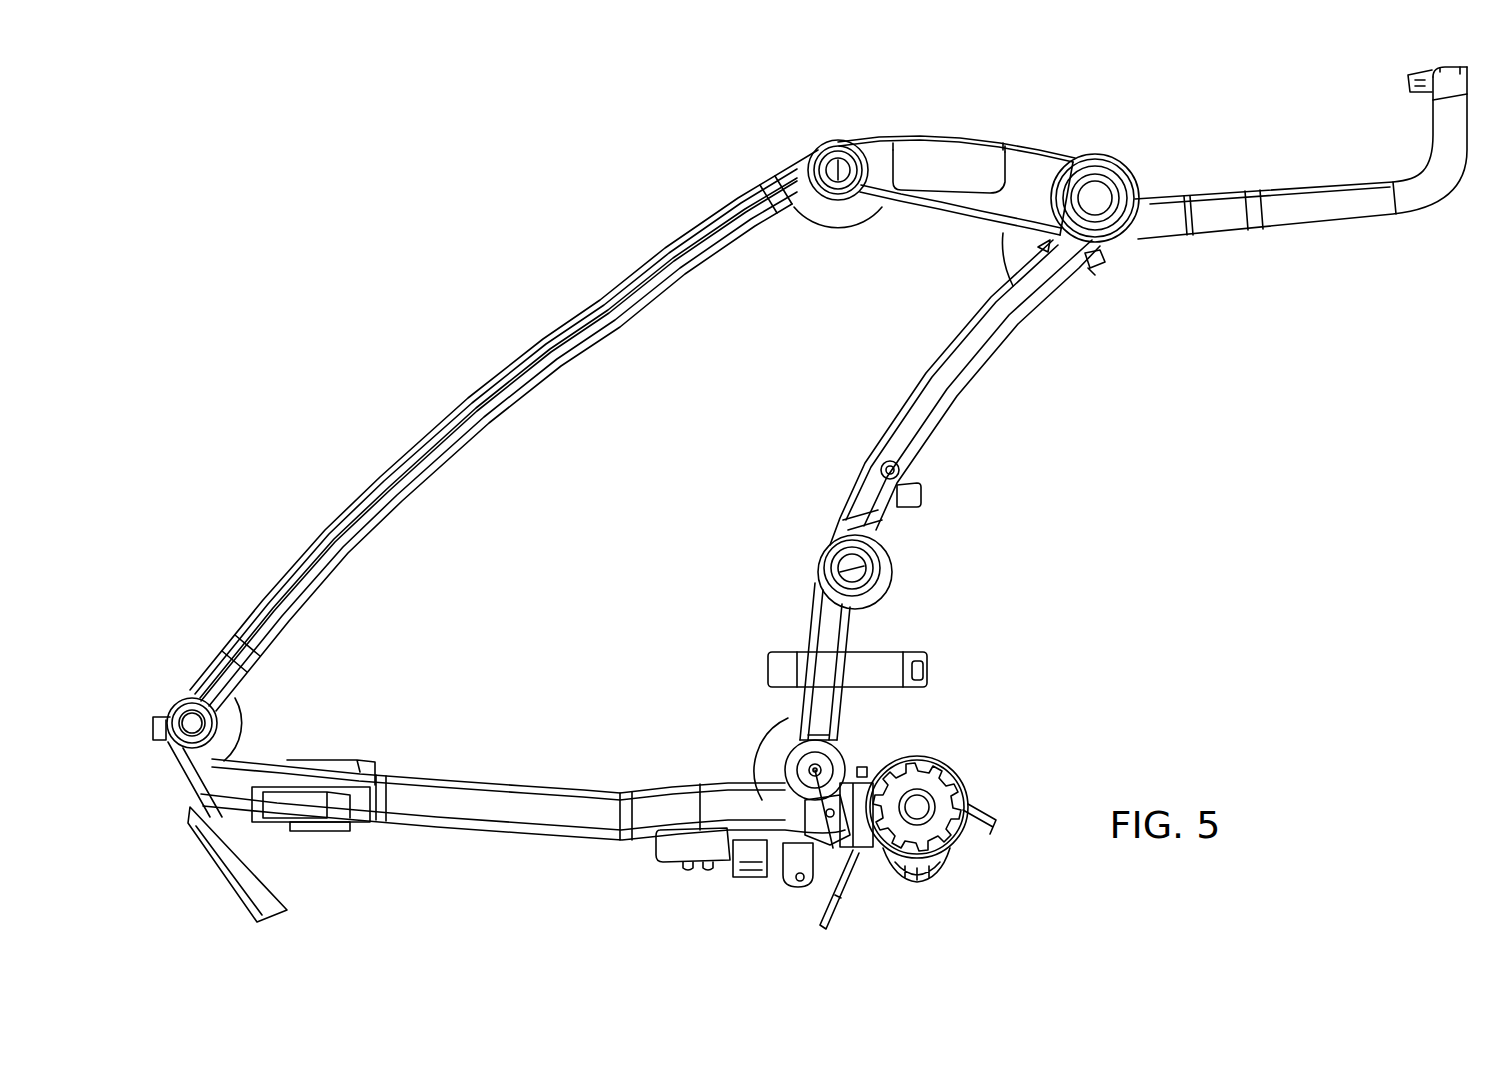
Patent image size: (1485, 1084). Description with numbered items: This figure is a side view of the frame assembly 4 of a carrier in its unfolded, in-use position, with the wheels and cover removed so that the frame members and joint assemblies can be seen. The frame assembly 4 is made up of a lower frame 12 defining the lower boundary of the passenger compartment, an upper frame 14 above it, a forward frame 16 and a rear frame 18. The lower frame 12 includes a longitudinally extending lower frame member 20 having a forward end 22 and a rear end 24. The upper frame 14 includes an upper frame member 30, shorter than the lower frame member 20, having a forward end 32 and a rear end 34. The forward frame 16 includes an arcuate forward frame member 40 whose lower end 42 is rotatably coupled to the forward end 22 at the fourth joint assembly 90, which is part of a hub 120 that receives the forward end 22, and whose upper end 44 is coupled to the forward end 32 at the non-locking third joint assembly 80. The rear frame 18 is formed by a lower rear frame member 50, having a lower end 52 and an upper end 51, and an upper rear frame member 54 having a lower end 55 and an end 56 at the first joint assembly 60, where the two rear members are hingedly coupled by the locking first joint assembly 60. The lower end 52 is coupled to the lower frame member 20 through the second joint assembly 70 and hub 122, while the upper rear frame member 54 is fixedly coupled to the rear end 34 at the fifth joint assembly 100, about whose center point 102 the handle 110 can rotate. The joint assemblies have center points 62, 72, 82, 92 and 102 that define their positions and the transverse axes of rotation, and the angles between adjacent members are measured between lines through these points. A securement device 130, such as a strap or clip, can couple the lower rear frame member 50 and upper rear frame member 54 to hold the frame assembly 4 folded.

The frame assembly 4 is at (518, 224).
The lower frame 12 is at (478, 838).
The upper frame 14 is at (938, 134).
The forward frame 16 is at (446, 382).
The rear frame 18 is at (945, 474).
The lower frame member 20 is at (500, 813).
The forward end 22 is at (400, 790).
The rear end 24 is at (650, 808).
The upper frame member 30 is at (982, 180).
The forward end 32 is at (886, 150).
The rear end 34 is at (1057, 148).
The forward frame member 40 is at (505, 362).
The lower end 42 is at (212, 658).
The upper end 44 is at (778, 175).
The lower rear frame member 50 is at (848, 647).
The upper end 51 is at (868, 618).
The lower end 52 is at (838, 722).
The upper rear frame member 54 is at (980, 385).
The lower end 55 is at (1067, 298).
The lower end 56 is at (895, 495).
The first joint assembly 60 is at (832, 587).
The center point 62 is at (850, 568).
The second joint assembly 70 is at (845, 765).
The center point 72 is at (852, 878).
The third joint assembly 80 is at (826, 150).
The center point 82 is at (840, 165).
The fourth joint assembly 90 is at (178, 705).
The center point 92 is at (180, 725).
The fifth joint assembly 100 is at (1110, 160).
The center point 102 is at (1104, 198).
The handle 110 is at (1405, 215).
The hub 120 is at (300, 810).
The hub 122 is at (767, 818).
The securement device 130 is at (930, 681).